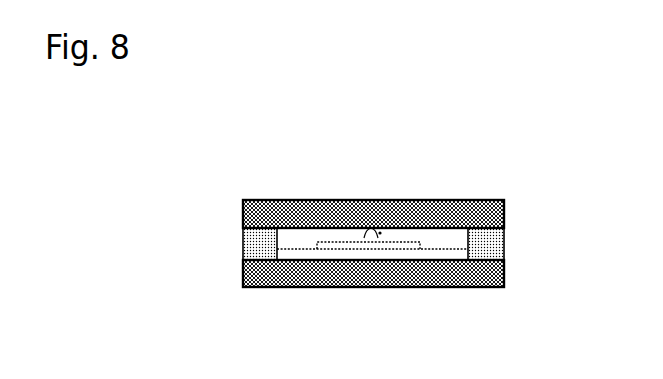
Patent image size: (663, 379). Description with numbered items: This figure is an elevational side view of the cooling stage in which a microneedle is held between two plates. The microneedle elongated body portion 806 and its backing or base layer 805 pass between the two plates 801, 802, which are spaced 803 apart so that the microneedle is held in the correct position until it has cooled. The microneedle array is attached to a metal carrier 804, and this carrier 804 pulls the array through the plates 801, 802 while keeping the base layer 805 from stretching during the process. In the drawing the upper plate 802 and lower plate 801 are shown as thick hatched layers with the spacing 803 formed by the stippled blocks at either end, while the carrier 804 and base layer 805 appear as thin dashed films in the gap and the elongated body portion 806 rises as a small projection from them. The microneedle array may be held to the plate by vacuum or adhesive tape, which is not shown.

The plate 801 is at (410, 275).
The plate 802 is at (442, 213).
The spacer 803 is at (505, 216).
The metal carrier 804 is at (326, 255).
The base layer 805 is at (340, 247).
The microneedle elongated body portion 806 is at (380, 233).